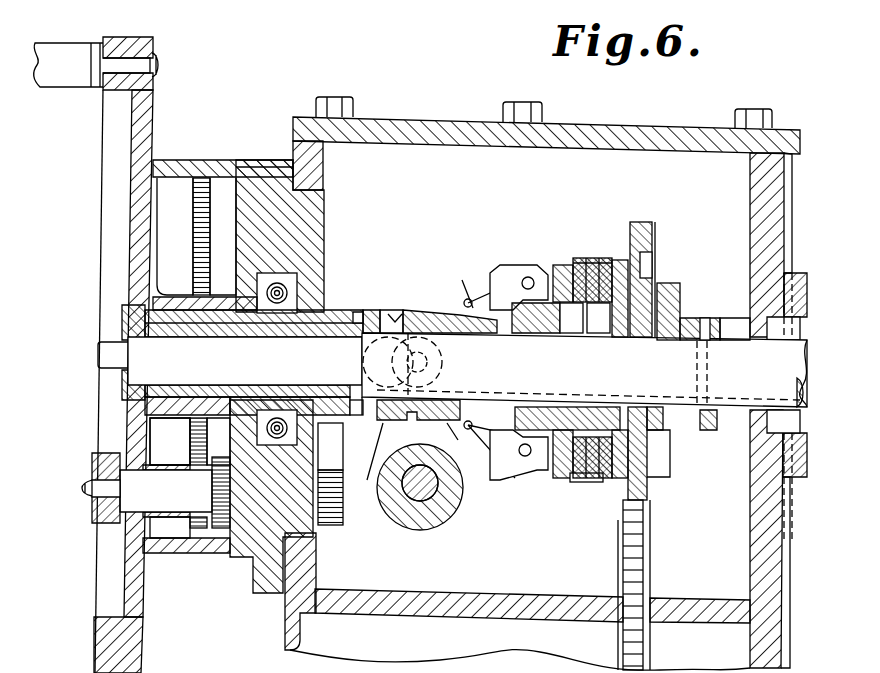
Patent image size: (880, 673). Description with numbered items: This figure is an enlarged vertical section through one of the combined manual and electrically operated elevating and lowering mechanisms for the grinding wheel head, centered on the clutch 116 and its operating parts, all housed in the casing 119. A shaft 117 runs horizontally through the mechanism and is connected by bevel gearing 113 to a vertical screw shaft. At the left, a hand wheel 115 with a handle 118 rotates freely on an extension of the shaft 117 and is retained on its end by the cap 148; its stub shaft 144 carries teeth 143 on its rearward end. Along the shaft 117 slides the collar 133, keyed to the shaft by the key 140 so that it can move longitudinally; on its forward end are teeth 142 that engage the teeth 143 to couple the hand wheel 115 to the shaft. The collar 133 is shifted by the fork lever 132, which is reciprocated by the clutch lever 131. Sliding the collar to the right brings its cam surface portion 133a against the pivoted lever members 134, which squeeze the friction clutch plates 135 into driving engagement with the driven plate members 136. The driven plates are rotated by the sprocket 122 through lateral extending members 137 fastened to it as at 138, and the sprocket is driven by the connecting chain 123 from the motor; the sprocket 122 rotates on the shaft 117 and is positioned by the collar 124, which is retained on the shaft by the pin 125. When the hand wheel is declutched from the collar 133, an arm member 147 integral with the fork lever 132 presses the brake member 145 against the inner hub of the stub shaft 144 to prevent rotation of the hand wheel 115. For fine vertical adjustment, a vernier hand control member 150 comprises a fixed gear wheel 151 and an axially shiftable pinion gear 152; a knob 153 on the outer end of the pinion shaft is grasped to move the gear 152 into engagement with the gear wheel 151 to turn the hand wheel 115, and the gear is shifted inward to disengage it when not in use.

The bevel gearing 113 is at (78, 672).
The hand wheel 115 is at (148, 124).
The clutch 116 is at (548, 265).
The shaft 117 is at (382, 362).
The handle 118 is at (62, 56).
The casing 119 is at (389, 141).
The sprocket 122 is at (642, 478).
The connecting chain 123 is at (640, 528).
The collar 124 is at (720, 325).
The pin 125 is at (698, 318).
The clutch lever 131 is at (423, 500).
The fork lever 132 is at (462, 430).
The collar 133 is at (406, 312).
The cam surface portion 133a is at (515, 290).
The pivoted lever member 134 is at (468, 303).
The friction clutch plate 135 is at (586, 258).
The driven plate member 136 is at (585, 485).
The lateral extending member 137 is at (617, 262).
The fastening 138 is at (646, 278).
The key 140 is at (519, 397).
The teeth 142 is at (375, 310).
The teeth 143 is at (358, 312).
The stub shaft 144 is at (330, 312).
The brake member 145 is at (345, 432).
The arm member 147 is at (362, 500).
The cap 148 is at (123, 320).
The vernier hand control member 150 is at (165, 502).
The fixed gear wheel 151 is at (196, 447).
The pinion gear 152 is at (220, 528).
The knob 153 is at (85, 455).